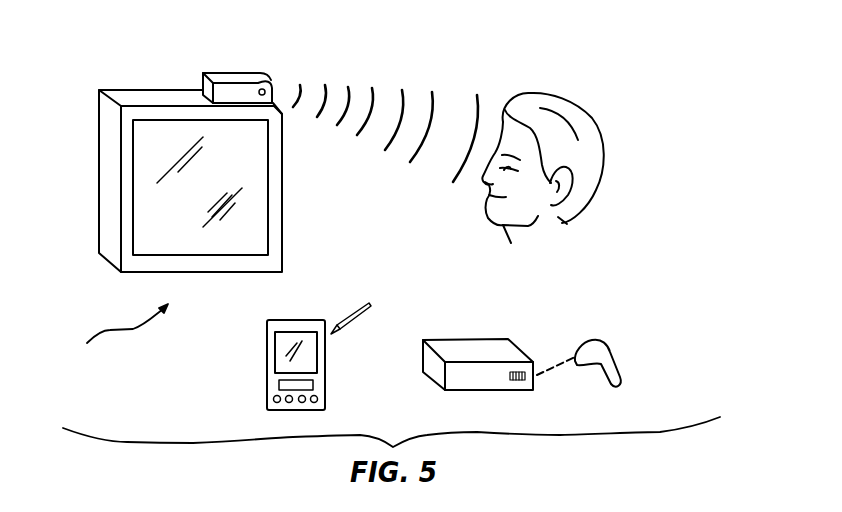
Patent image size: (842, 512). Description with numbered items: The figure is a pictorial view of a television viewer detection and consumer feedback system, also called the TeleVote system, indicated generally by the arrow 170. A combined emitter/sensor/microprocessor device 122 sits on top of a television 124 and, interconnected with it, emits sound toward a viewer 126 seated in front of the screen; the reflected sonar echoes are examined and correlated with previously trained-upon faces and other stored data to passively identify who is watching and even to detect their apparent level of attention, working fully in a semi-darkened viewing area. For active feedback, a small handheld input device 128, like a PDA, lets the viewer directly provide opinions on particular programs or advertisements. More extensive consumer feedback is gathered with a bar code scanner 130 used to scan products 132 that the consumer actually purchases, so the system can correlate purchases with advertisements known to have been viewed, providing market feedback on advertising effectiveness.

The emitter/sensor/microprocessor device 122 is at (246, 74).
The television 124 is at (147, 188).
The viewer 126 is at (560, 103).
The handheld input device 128 is at (280, 347).
The bar code scanner 130 is at (617, 338).
The products 132 is at (490, 348).
The system 170 is at (108, 334).